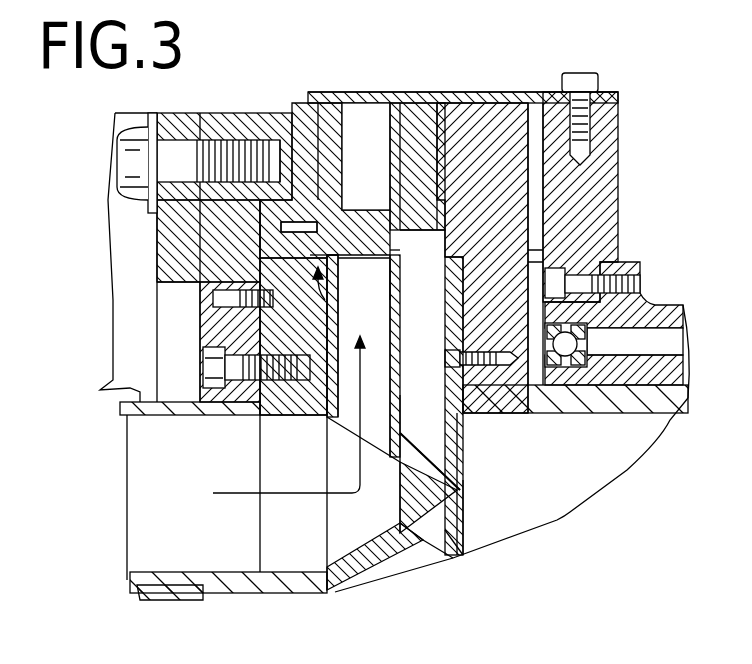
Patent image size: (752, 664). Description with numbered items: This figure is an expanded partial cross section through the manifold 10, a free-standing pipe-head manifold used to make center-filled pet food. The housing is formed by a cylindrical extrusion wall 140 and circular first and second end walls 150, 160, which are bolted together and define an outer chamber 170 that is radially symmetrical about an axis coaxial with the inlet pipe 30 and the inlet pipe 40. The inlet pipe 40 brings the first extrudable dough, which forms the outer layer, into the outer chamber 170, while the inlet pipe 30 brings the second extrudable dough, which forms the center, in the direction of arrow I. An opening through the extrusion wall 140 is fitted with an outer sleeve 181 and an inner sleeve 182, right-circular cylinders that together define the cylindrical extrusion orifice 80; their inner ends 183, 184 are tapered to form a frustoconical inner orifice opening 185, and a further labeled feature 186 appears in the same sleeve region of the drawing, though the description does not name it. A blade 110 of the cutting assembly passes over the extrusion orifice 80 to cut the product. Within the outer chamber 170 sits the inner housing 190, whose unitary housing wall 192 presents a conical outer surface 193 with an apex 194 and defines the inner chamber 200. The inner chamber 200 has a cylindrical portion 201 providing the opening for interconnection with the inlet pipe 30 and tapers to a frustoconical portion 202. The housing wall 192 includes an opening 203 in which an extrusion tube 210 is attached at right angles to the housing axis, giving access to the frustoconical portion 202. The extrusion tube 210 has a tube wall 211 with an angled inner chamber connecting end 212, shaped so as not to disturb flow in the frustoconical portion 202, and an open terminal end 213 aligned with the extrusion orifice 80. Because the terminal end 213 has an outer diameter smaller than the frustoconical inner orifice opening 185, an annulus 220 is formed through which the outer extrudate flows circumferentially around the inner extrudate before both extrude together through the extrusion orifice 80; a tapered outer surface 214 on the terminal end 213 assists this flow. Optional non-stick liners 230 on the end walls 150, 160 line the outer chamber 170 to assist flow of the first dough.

The manifold 10 is at (596, 52).
The inlet pipe 30 is at (135, 390).
The inlet pipe 40 is at (665, 405).
The extrusion orifice 80 is at (352, 120).
The blade 110 is at (530, 97).
The extrusion wall 140 is at (300, 110).
The first end wall 150 is at (235, 127).
The second end wall 160 is at (467, 120).
The outer chamber 170 is at (414, 422).
The outer sleeve 181 is at (404, 115).
The inner sleeve 182 is at (332, 170).
The inner end 183 is at (333, 236).
The inner end 184 is at (312, 256).
The frustoconical inner orifice opening 185 is at (393, 256).
The end face 186 is at (400, 258).
The inner housing 190 is at (419, 546).
The housing wall 192 is at (400, 545).
The conical outer surface 193 is at (435, 545).
The apex 194 is at (465, 497).
The inner chamber 200 is at (324, 501).
The cylindrical portion 201 is at (295, 505).
The frustoconical portion 202 is at (340, 547).
The opening 203 is at (400, 433).
The extrusion tube 210 is at (330, 320).
The tube wall 211 is at (400, 395).
The inner chamber connecting end 212 is at (390, 457).
The terminal end 213 is at (363, 262).
The tapered outer surface 214 is at (397, 284).
The annulus 220 is at (291, 408).
The liner 230 is at (520, 258).